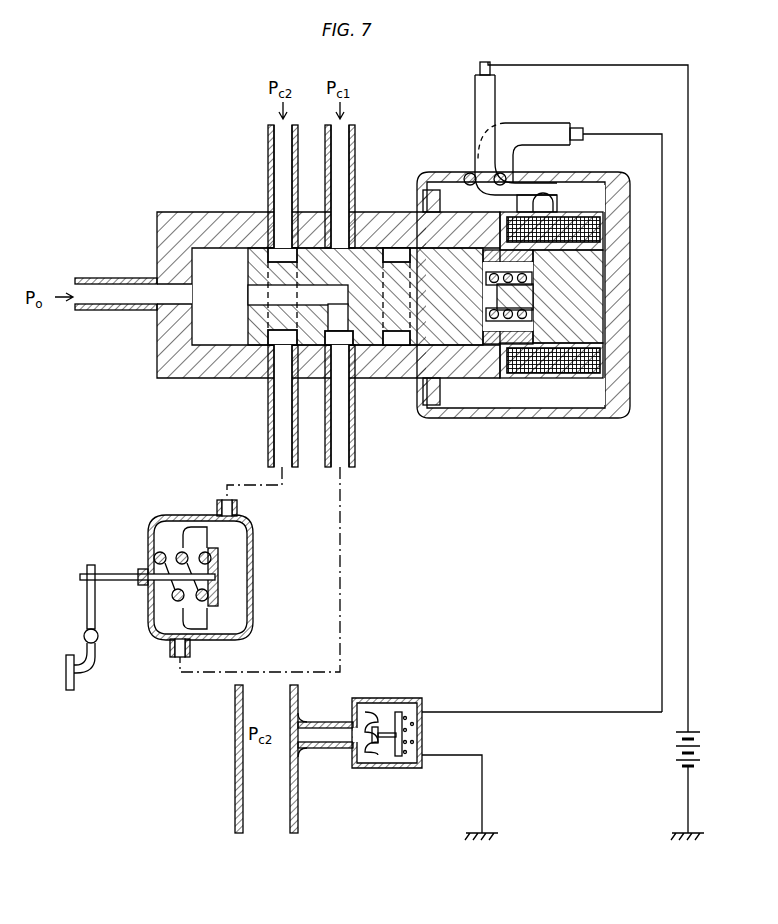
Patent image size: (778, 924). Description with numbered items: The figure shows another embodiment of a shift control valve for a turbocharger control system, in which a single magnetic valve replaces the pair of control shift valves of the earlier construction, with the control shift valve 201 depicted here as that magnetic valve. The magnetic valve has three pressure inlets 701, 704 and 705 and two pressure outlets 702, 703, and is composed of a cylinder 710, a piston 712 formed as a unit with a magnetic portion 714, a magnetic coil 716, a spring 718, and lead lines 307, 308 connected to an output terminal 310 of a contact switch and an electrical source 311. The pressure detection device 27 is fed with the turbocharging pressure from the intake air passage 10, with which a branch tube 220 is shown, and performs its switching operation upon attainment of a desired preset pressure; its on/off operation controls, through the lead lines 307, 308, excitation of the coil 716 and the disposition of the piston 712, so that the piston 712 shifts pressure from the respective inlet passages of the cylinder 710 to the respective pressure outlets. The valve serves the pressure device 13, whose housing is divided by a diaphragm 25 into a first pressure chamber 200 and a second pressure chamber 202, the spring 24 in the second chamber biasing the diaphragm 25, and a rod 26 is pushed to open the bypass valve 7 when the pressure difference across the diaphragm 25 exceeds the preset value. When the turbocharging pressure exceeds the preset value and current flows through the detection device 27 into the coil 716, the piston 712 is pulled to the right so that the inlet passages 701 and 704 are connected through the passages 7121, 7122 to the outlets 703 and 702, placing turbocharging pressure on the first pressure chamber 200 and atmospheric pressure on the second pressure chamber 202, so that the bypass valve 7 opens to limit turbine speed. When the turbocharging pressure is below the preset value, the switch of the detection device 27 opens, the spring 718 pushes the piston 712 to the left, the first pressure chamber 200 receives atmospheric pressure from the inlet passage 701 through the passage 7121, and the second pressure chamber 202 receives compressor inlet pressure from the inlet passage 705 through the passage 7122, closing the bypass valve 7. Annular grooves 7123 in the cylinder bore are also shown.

The control shift valve 201 is at (192, 222).
The pressure inlet 701 is at (112, 306).
The pressure outlet 702 is at (280, 437).
The pressure outlet 703 is at (340, 453).
The pressure inlet 704 is at (283, 147).
The pressure inlet 705 is at (340, 145).
The cylinder 710 is at (372, 348).
The piston 712 is at (463, 338).
The magnetic portion 714 is at (533, 392).
The magnetic coil 716 is at (582, 392).
The spring 718 is at (500, 322).
The passage 7121 is at (260, 286).
The passage 7122 is at (277, 336).
The groove 7123 is at (398, 346).
The lead line 307 is at (627, 134).
The lead line 308 is at (615, 66).
The output terminal 310 is at (486, 712).
The electrical source 311 is at (675, 750).
The pressure device 13 is at (187, 571).
The first pressure chamber 200 is at (237, 541).
The second pressure chamber 202 is at (160, 625).
The spring 24 is at (160, 557).
The diaphragm 25 is at (232, 610).
The rod 26 is at (124, 574).
The bypass valve 7 is at (75, 688).
The intake air passage 10 is at (253, 798).
The pipe 220 is at (336, 742).
The pressure detection device 27 is at (392, 757).